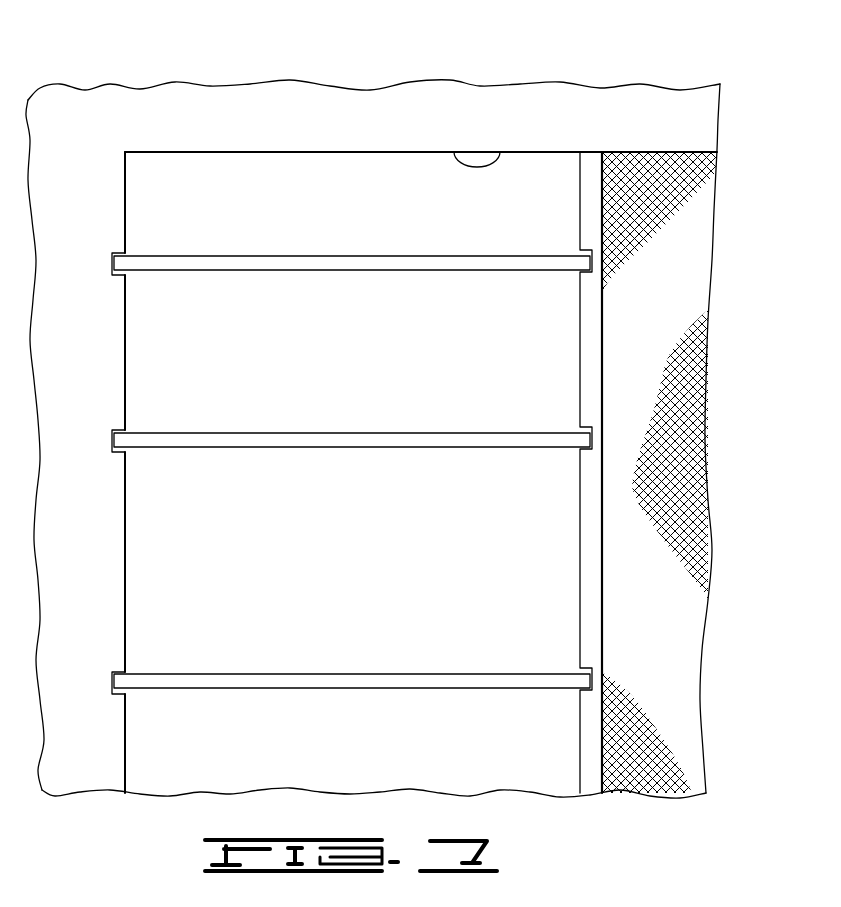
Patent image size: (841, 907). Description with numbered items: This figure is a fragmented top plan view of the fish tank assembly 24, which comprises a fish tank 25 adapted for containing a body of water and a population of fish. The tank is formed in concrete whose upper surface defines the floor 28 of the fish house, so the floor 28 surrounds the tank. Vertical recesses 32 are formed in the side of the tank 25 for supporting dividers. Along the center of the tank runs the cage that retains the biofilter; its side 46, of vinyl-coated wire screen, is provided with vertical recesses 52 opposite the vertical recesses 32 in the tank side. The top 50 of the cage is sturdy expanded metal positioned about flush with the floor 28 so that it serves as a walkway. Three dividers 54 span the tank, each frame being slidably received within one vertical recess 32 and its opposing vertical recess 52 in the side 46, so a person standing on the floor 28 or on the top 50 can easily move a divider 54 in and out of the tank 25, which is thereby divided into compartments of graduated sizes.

The fish tank assembly 24 is at (407, 401).
The fish tank 25 is at (500, 160).
The floor 28 is at (235, 107).
The vertical recesses 32 is at (114, 256).
The side 46 is at (598, 165).
The top 50 is at (678, 302).
The vertical recesses 52 is at (602, 262).
The divider 54 is at (332, 263).